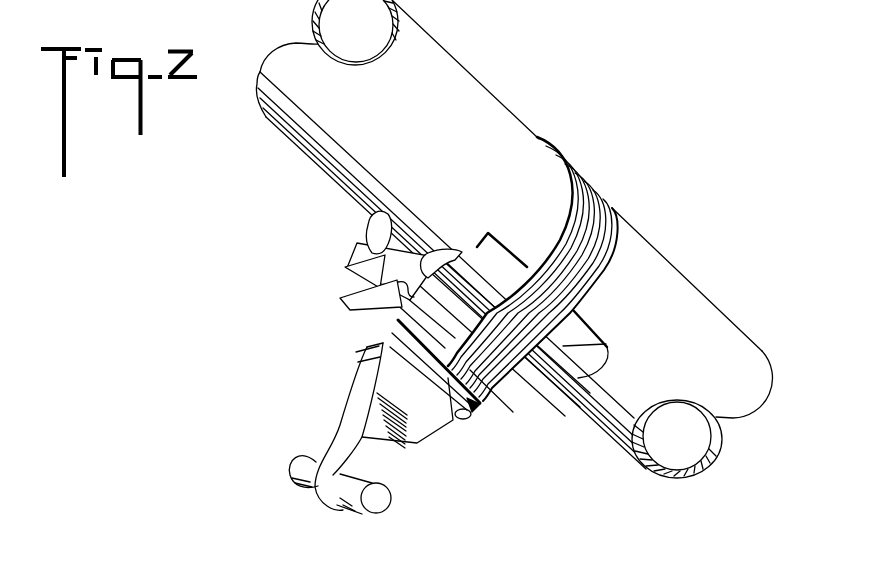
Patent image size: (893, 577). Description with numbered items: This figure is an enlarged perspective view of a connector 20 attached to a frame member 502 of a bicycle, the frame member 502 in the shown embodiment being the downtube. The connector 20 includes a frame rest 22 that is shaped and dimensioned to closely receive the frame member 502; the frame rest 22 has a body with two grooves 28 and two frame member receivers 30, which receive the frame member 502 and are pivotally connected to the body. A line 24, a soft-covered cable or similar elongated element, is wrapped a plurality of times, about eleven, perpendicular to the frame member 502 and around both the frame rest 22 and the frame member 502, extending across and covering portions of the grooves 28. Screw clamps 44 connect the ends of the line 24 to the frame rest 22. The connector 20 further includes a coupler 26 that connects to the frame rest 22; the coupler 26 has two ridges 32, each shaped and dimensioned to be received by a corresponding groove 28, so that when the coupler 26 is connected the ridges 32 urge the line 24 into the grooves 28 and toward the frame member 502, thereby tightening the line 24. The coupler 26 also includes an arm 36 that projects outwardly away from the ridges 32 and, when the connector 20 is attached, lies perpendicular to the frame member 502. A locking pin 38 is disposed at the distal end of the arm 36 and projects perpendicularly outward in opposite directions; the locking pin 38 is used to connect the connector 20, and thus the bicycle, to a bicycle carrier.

The frame member 502 is at (462, 103).
The line 24 is at (588, 184).
The connector 20 is at (304, 233).
The frame rest 22 is at (349, 244).
The groove 28 is at (362, 257).
The ridge 32 is at (397, 297).
The coupler 26 is at (327, 392).
The arm 36 is at (390, 440).
The locking pin 38 is at (302, 458).
The frame member receiver 30 is at (565, 345).
The screw clamp 44 is at (486, 420).